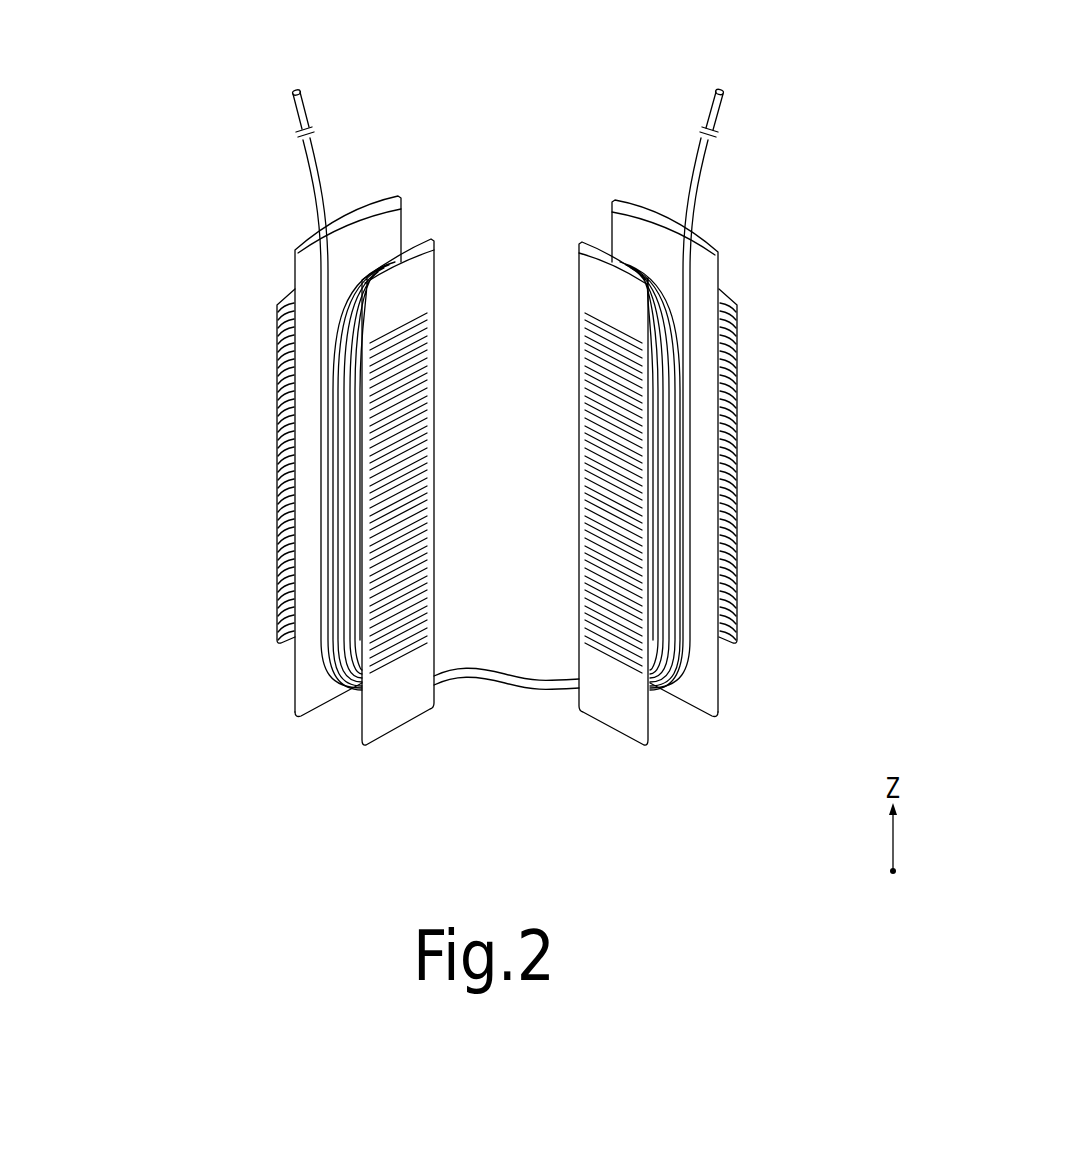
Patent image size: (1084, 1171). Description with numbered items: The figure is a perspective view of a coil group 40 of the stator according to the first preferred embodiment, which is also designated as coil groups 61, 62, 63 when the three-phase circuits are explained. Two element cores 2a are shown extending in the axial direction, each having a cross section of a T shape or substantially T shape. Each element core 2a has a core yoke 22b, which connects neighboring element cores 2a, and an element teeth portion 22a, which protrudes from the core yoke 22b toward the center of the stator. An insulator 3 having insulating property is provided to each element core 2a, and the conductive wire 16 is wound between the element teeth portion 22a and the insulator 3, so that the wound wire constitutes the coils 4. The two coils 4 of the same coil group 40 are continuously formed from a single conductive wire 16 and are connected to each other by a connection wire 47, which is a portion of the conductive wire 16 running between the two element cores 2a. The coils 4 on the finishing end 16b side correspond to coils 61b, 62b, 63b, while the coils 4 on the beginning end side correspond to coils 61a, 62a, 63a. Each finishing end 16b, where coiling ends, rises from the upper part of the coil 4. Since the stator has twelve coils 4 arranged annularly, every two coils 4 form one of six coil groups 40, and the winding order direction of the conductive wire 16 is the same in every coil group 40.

The element core 2a is at (428, 231).
The insulator 3 is at (381, 193).
The coil 4 is at (330, 469).
The conductive wire 16 is at (292, 107).
The finishing end 16b is at (291, 87).
The element teeth portion 22a is at (423, 372).
The core yoke 22b is at (285, 352).
The coil group 40 is at (500, 387).
The connection wire 47 is at (508, 684).
The coil group 61 is at (500, 387).
The coil group 62 is at (500, 387).
The coil group 63 is at (500, 138).
The coil 61a is at (650, 474).
The coil 61b is at (364, 474).
The coil 62a is at (650, 474).
The coil 62b is at (364, 474).
The coil 63a is at (650, 474).
The coil 63b is at (364, 474).